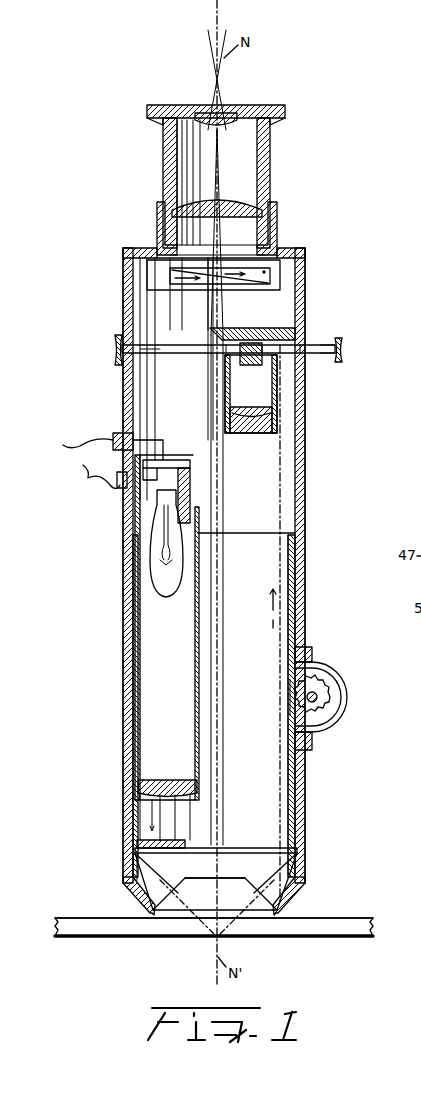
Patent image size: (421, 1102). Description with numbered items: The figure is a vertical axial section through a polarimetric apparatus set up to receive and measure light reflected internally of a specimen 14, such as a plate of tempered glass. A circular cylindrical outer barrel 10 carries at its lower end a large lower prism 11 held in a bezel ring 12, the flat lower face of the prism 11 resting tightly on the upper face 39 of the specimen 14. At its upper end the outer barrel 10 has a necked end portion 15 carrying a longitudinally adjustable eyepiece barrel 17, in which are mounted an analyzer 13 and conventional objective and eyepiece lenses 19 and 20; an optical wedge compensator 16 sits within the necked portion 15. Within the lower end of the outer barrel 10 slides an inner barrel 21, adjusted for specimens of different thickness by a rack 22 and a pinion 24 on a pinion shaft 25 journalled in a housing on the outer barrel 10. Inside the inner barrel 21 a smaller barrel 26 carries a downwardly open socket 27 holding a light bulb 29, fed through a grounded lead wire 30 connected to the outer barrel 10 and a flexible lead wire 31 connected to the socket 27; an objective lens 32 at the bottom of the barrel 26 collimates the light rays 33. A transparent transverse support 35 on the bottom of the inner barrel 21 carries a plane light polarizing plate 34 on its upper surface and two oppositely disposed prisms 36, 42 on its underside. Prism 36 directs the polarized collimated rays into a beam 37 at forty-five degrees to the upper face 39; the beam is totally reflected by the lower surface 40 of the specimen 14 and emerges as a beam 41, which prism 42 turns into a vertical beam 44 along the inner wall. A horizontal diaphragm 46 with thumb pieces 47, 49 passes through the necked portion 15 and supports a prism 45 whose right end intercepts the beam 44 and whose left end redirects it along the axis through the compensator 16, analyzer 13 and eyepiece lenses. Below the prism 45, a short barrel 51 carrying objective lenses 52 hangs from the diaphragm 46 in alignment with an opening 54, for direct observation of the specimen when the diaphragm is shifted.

The outer barrel 10 is at (298, 525).
The lower prism 11 is at (222, 884).
The bezel ring 12 is at (304, 895).
The analyzer 13 is at (247, 248).
The specimen 14 is at (318, 932).
The necked end portion 15 is at (303, 284).
The optical wedge compensator 16 is at (232, 283).
The eyepiece barrel 17 is at (270, 158).
The objective lens 19 is at (237, 204).
The eyepiece lens 20 is at (226, 118).
The inner barrel 21 is at (301, 640).
The rack 22 is at (293, 690).
The pinion 24 is at (326, 672).
The pinion shaft 25 is at (317, 697).
The smaller tube or barrel 26 is at (178, 652).
The socket 27 is at (190, 490).
The light bulb 29 is at (156, 570).
The grounded lead wire 30 is at (103, 482).
The flexible lead wire 31 is at (85, 440).
The objective lens 32 is at (180, 780).
The light rays 33 is at (150, 800).
The light polarizing plate 34 is at (140, 846).
The transparent transverse support 35 is at (238, 847).
The prism 36 is at (136, 893).
The beam 37 is at (181, 906).
The upper face 39 is at (76, 917).
The lower surface 40 is at (98, 940).
The beam 41 is at (254, 906).
The prism 42 is at (270, 863).
The vertical beam 44 is at (210, 310).
The prism 45 is at (262, 337).
The horizontal diaphragm 46 is at (183, 350).
The thumb piece 47 is at (116, 352).
The thumb piece 49 is at (345, 356).
The short barrel 51 is at (276, 402).
The objective lenses 52 is at (262, 428).
The opening 54 is at (298, 362).